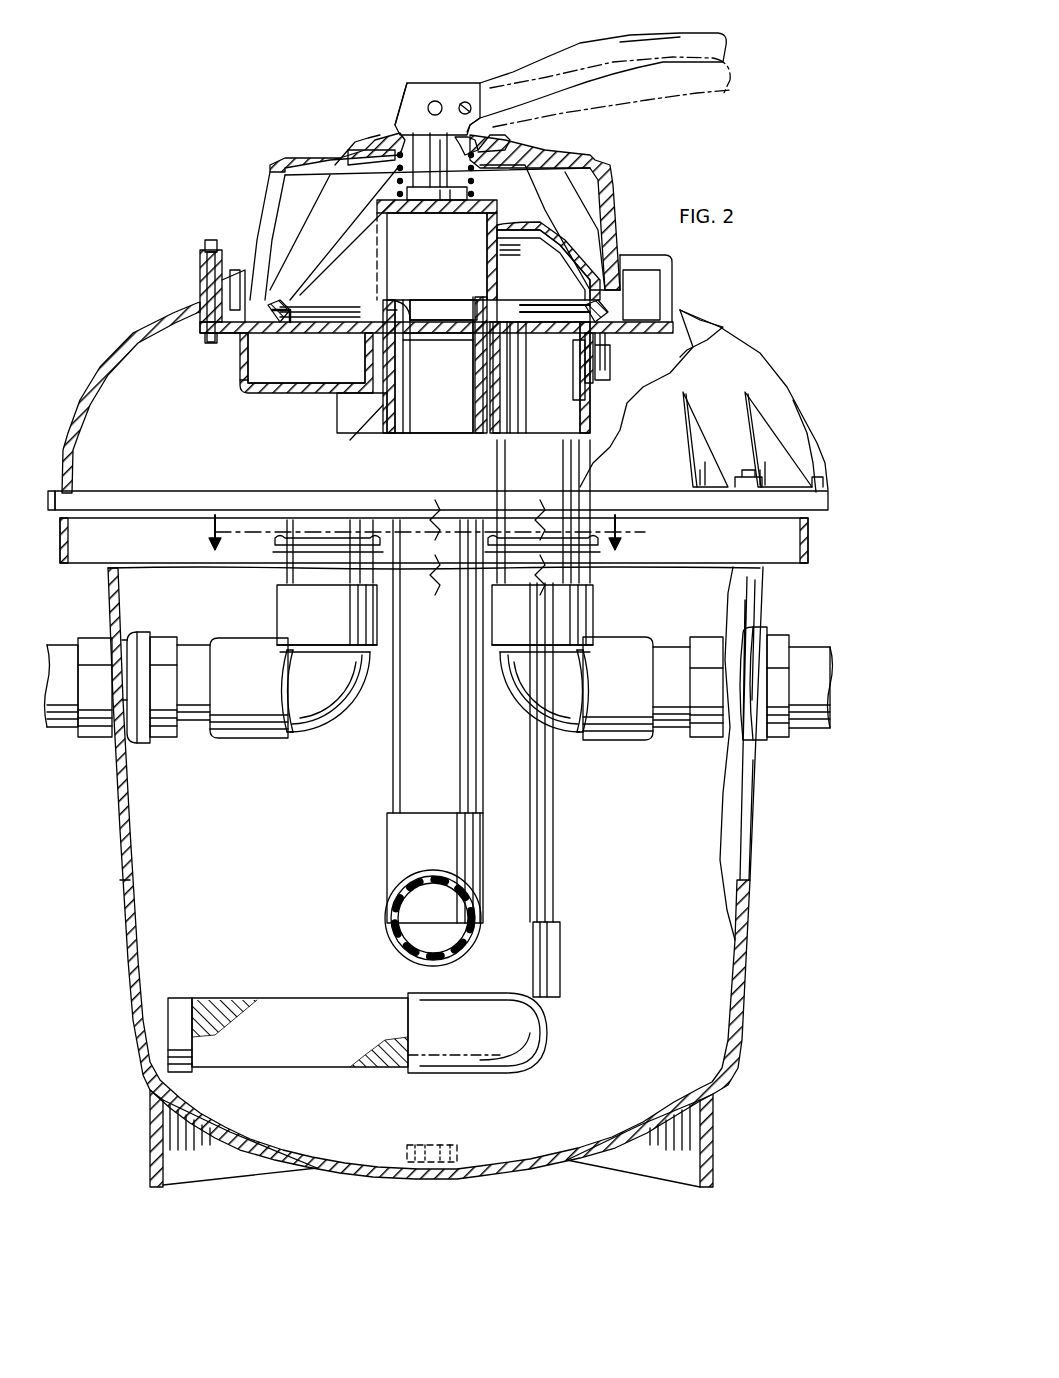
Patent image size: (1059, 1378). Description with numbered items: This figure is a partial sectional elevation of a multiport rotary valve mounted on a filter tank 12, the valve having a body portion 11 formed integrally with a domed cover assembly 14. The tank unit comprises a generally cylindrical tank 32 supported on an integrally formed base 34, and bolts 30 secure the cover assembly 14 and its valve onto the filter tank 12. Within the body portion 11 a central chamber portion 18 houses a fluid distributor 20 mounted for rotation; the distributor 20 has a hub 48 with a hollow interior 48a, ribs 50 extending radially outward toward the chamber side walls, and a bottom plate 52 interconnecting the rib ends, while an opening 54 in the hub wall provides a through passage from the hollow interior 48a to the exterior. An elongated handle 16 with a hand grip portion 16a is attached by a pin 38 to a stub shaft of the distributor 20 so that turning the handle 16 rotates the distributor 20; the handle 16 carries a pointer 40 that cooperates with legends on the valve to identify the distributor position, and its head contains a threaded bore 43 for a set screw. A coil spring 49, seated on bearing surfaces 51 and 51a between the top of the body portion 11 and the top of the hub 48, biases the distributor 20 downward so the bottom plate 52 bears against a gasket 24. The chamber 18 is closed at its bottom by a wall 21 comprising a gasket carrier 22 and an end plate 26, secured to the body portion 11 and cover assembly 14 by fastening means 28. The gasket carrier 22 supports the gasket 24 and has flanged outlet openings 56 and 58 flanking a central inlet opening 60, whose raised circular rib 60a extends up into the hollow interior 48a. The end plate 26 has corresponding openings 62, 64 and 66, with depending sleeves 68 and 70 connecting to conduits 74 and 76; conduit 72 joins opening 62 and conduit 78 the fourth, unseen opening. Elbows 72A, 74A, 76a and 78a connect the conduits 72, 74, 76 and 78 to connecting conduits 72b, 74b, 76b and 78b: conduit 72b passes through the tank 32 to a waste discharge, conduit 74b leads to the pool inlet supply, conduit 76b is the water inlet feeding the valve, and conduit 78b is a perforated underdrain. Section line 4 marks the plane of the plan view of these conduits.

The body portion 11 is at (275, 160).
The filter tank 12 is at (112, 818).
The cover assembly 14 is at (90, 372).
The handle 16 is at (512, 75).
The hand grip portion 16a is at (615, 43).
The central chamber portion 18 is at (585, 178).
The fluid distributor 20 is at (518, 228).
The wall 21 is at (295, 398).
The gasket carrier 22 is at (660, 333).
The gasket 24 is at (270, 322).
The end plate 26 is at (242, 392).
The fastening means 28 is at (212, 240).
The bolts 30 is at (738, 477).
The tank 32 is at (120, 880).
The base 34 is at (150, 1135).
The pin 38 is at (433, 101).
The pointer 40 is at (395, 115).
The second threaded bore 43 is at (464, 102).
The hub 48 is at (395, 210).
The hollow interior 48a is at (455, 258).
The coil spring 49 is at (477, 168).
The ribs 50 is at (345, 228).
The bearing surface 51 is at (355, 150).
The bearing surface 51a is at (398, 195).
The bottom plate 52 is at (285, 300).
The opening 54 is at (377, 247).
The circular opening 56 is at (325, 312).
The circular opening 58 is at (528, 312).
The circular opening 60 is at (430, 298).
The raised circular rib portion 60a is at (400, 300).
The circular opening 62 is at (325, 333).
The circular opening 64 is at (548, 330).
The circular opening 66 is at (430, 325).
The sleeve 68 is at (590, 398).
The sleeve 70 is at (412, 379).
The conduit 72 is at (318, 515).
The elbow 72A is at (315, 730).
The connecting conduit 72b is at (190, 727).
The conduit 74 is at (500, 430).
The elbow 74A is at (540, 715).
The connecting conduit 74b is at (665, 727).
The conduit 76 is at (393, 430).
The elbow 76a is at (390, 835).
The connecting conduit 76b is at (386, 919).
The conduit 78 is at (543, 850).
The elbow 78a is at (550, 1040).
The connecting conduit 78b is at (298, 1005).
The section line 4 is at (417, 536).